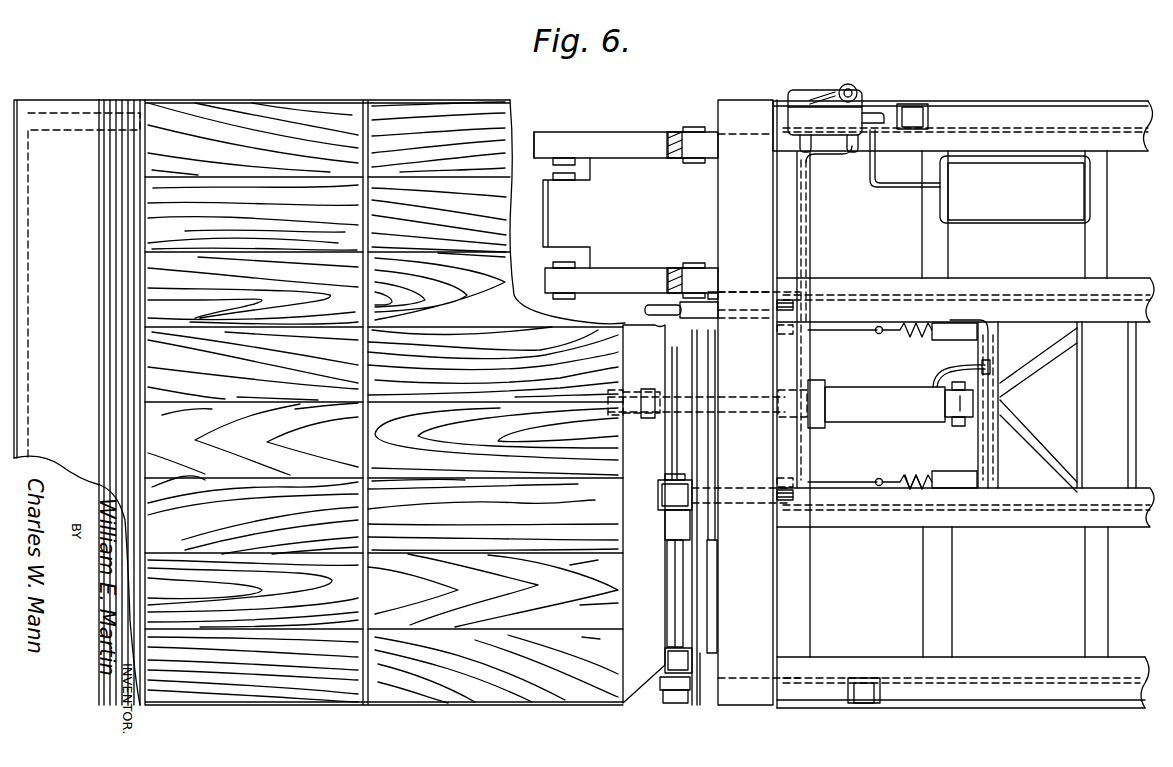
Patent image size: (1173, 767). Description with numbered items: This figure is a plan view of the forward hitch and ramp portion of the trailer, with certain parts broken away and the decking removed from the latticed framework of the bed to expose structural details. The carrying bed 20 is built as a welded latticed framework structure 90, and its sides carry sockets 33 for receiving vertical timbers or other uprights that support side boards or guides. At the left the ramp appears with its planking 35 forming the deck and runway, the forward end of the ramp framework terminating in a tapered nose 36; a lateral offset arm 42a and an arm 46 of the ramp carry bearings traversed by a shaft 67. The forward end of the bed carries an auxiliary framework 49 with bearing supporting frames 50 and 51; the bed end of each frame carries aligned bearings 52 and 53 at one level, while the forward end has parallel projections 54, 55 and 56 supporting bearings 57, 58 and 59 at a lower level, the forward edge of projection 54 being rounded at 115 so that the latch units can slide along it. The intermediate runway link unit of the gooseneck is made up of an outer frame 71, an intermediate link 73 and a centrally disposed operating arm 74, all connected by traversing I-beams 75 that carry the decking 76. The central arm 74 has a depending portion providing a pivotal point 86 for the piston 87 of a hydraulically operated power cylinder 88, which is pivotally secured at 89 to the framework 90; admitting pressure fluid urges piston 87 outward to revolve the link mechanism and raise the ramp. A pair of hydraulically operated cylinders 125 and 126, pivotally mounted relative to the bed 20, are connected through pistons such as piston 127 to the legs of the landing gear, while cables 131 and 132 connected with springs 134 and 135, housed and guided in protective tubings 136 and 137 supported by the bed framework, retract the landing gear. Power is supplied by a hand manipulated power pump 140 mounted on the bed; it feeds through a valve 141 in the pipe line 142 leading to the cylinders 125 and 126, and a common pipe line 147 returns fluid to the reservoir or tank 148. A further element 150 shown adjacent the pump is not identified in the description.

The carrying bed 20 is at (1076, 99).
The sockets 33 is at (913, 108).
The planking 35 is at (402, 182).
The tapered nose 36 is at (80, 132).
The lateral offset arm 42a is at (678, 658).
The arm 46 is at (683, 528).
The auxiliary framework 49 is at (742, 100).
The bearing supporting frame 50 is at (617, 195).
The bearing supporting frame 51 is at (724, 663).
The bearing 52 is at (696, 163).
The bearing 53 is at (690, 266).
The projection 54 is at (590, 140).
The projection 55 is at (552, 198).
The projection 56 is at (553, 283).
The bearing 57 is at (573, 162).
The bearing 58 is at (572, 180).
The bearing 59 is at (576, 297).
The shaft 67 is at (676, 569).
The outer frame 71 is at (660, 703).
The intermediate link 73 is at (665, 500).
The operating arm 74 is at (637, 390).
The I-beams 75 is at (690, 356).
The decking 76 is at (706, 620).
The pivotal point 86 is at (647, 420).
The piston 87 is at (733, 413).
The power cylinder 88 is at (893, 398).
The pivotal securement 89 is at (975, 403).
The latticed framework structure 90 is at (1113, 287).
The rounded forward edge 115 is at (536, 141).
The hydraulically operated cylinder 125 is at (721, 292).
The hydraulically operated cylinder 126 is at (722, 489).
The piston 127 is at (655, 304).
The cable 131 is at (838, 333).
The cable 132 is at (846, 481).
The spring 134 is at (908, 323).
The spring 135 is at (915, 490).
The protective tubing 136 is at (955, 322).
The protective tubing 137 is at (951, 471).
The power pump 140 is at (805, 90).
The valve 141 is at (827, 306).
The pipe line 142 is at (812, 163).
The common pipe line 147 is at (888, 191).
The reservoir 148 is at (1008, 213).
The gauge 150 is at (855, 85).